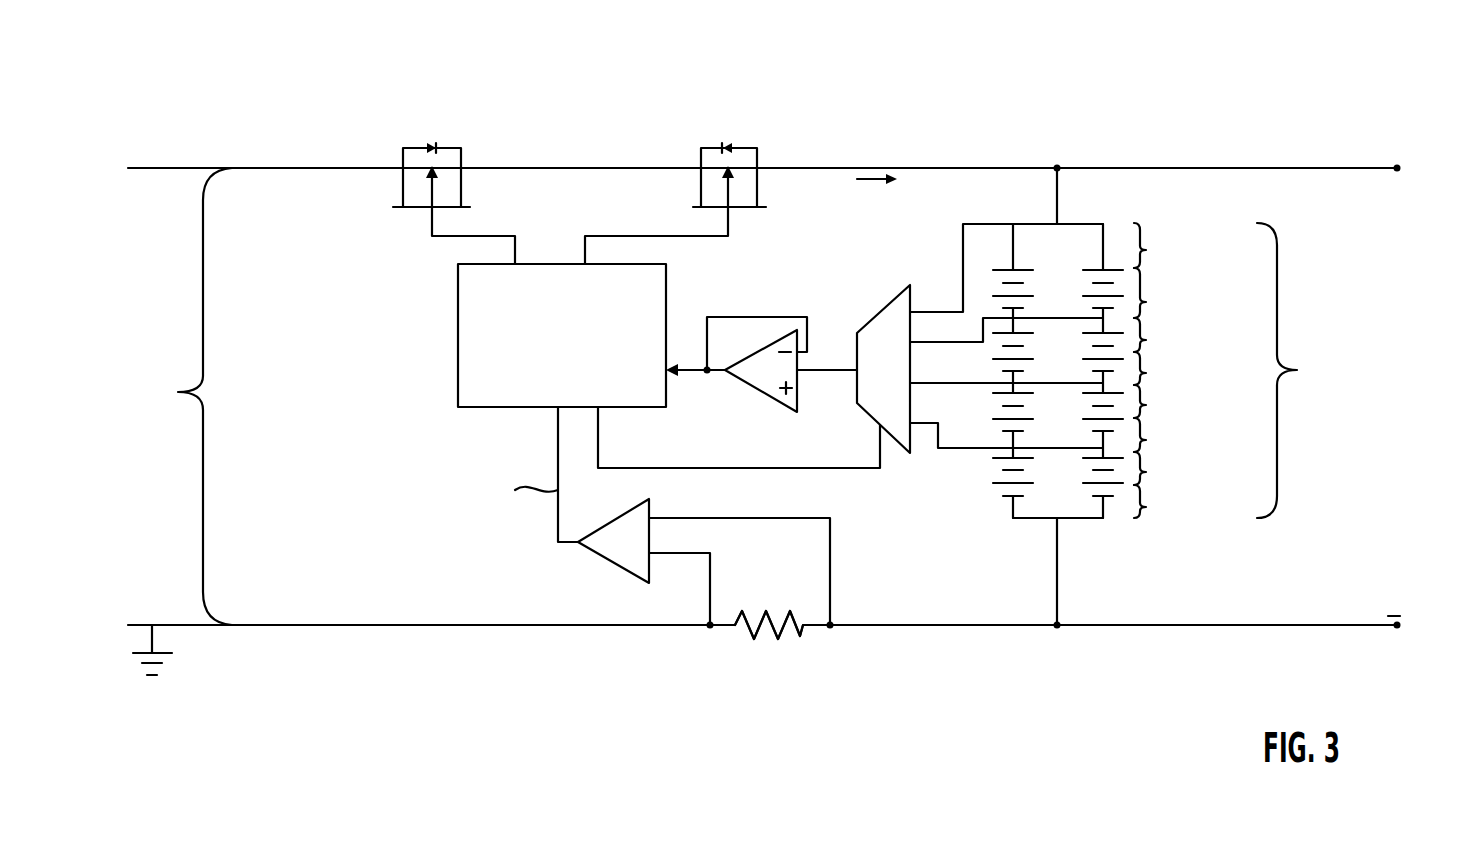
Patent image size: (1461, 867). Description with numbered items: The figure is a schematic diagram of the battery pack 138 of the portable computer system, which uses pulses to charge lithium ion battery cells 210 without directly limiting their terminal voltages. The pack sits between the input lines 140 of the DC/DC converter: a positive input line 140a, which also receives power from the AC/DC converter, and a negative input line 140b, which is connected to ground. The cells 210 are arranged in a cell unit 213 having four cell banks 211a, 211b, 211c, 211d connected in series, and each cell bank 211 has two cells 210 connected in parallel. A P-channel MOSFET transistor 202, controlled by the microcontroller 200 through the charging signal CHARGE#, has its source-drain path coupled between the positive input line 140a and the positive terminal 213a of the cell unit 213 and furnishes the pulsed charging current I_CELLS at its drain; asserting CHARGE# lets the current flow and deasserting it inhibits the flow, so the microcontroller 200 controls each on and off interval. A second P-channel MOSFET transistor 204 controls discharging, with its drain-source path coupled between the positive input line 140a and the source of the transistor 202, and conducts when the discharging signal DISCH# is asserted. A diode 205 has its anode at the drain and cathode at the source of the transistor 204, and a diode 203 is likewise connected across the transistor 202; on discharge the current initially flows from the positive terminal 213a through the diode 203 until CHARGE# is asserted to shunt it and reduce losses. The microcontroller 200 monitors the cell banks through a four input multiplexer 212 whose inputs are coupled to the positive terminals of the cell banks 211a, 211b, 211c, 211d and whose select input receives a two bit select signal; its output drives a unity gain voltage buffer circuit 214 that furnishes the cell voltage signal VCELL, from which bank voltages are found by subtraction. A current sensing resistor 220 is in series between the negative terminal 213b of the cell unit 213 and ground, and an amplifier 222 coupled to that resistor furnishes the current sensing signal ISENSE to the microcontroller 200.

The battery pack 138 is at (921, 686).
The input lines 140 is at (181, 396).
The positive input line 140a is at (182, 168).
The negative input line 140b is at (206, 627).
The microcontroller 200 is at (457, 336).
The P-channel MOSFET transistor 202 is at (754, 158).
The diode 203 is at (731, 140).
The P-channel MOSFET transistor 204 is at (424, 178).
The diode 205 is at (441, 136).
The lithium ion battery cells 210 is at (1077, 294).
The cell bank 211 is at (1146, 250).
The first cell bank 211a is at (1146, 302).
The second cell bank 211b is at (1146, 373).
The third cell bank 211c is at (1146, 440).
The fourth cell bank 211d is at (1146, 507).
The four input multiplexer 212 is at (893, 444).
The cell unit 213 is at (1342, 370).
The positive terminal 213a is at (1057, 165).
The negative terminal 213b is at (1057, 630).
The unity gain voltage buffer circuit 214 is at (797, 387).
The current sensing resistor 220 is at (763, 637).
The amplifier 222 is at (607, 562).